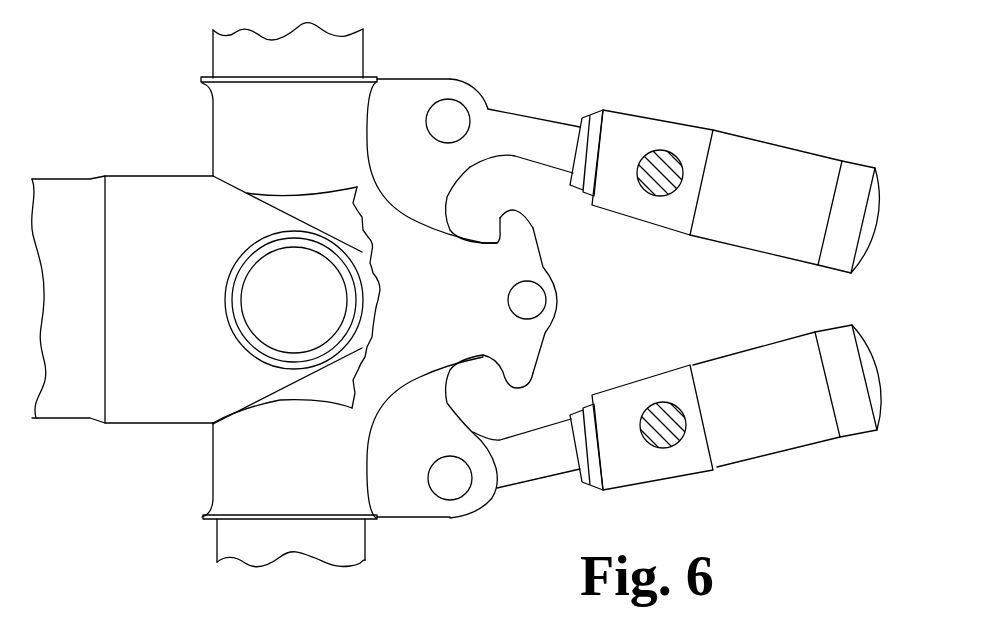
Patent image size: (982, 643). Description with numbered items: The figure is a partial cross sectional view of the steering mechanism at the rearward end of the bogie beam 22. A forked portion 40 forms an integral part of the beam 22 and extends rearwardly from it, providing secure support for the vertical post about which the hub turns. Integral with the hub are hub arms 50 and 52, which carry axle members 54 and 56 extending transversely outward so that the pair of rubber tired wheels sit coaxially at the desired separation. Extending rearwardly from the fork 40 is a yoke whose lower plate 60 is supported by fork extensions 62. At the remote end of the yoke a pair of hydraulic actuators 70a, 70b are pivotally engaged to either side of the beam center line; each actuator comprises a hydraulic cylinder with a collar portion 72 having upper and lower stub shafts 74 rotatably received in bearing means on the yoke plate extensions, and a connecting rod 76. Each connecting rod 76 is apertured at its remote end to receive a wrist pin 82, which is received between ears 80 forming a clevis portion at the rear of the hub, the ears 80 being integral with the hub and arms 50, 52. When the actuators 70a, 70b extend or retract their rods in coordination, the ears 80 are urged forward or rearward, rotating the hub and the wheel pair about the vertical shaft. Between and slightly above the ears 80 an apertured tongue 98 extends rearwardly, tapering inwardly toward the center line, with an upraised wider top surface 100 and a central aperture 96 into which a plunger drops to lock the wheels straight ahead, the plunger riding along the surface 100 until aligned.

The bogie beam 22 is at (78, 422).
The forked portion 40 is at (150, 428).
The hub arm 50 is at (230, 478).
The hub arm 52 is at (233, 137).
The axle member 54 is at (353, 533).
The axle member 56 is at (223, 62).
The lower plate 60 is at (536, 303).
The fork extension 62 is at (327, 390).
The hydraulic actuator 70a is at (803, 422).
The hydraulic actuator 70b is at (800, 177).
The collar portion 72 is at (698, 165).
The stub shaft 74 is at (670, 153).
The connecting rod 76 is at (533, 133).
The ear 80 is at (443, 90).
The wrist pin 82 is at (453, 113).
The central aperture 96 is at (520, 292).
The tongue 98 is at (498, 224).
The top surface 100 is at (525, 236).